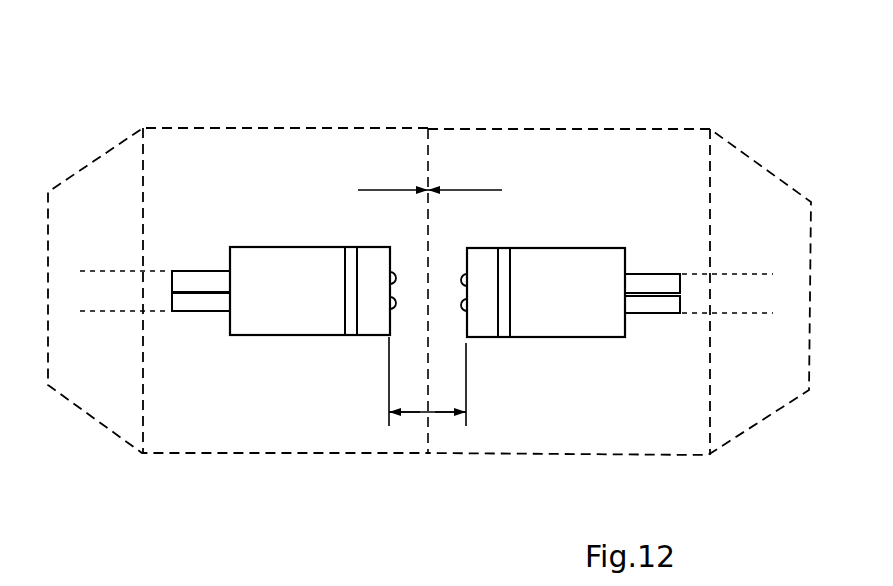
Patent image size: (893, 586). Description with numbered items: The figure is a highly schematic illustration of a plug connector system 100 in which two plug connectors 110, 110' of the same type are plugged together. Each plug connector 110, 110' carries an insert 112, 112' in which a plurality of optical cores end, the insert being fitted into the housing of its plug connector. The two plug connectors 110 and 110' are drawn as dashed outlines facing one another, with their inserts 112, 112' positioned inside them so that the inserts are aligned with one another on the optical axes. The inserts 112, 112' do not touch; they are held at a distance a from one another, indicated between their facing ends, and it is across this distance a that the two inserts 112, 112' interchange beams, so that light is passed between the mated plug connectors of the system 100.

The plug connector system 100 is at (448, 105).
The plug connector 110 is at (619, 246).
The plug connector 110' is at (238, 244).
The insert 112 is at (617, 382).
The insert 112' is at (238, 382).
The distance a is at (440, 412).